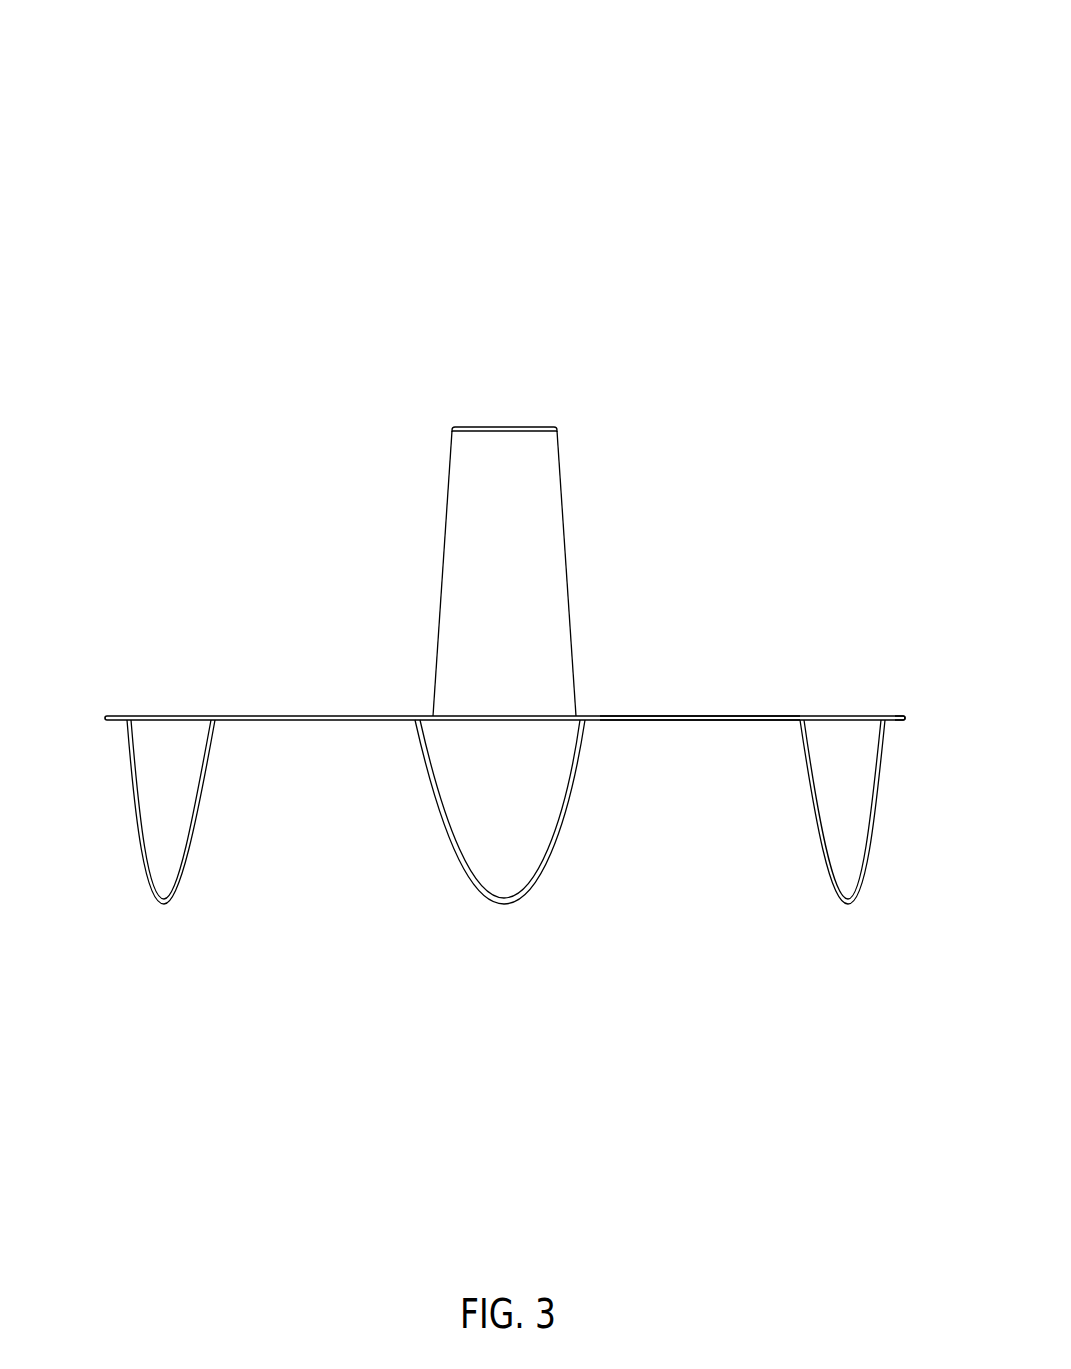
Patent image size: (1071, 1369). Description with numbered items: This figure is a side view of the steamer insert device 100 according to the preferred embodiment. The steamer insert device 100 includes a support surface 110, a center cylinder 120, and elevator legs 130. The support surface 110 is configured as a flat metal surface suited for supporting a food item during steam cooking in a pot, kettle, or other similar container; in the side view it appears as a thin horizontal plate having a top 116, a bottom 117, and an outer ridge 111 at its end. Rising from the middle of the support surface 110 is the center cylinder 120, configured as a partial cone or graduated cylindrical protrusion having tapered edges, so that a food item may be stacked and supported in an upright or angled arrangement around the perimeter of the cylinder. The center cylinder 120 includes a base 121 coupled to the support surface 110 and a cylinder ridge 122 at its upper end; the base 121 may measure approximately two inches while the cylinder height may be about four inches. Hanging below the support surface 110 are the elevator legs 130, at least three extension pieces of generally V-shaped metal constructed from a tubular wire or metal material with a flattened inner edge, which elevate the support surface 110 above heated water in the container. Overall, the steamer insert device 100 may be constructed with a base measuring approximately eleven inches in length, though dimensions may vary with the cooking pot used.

The steamer insert device 100 is at (118, 126).
The support surface 110 is at (218, 698).
The outer ridge 111 is at (904, 716).
The top 116 is at (702, 716).
The bottom 117 is at (684, 722).
The center cylinder 120 is at (415, 525).
The base 121 is at (562, 467).
The cylinder ridge 122 is at (558, 428).
The elevator legs 130 is at (164, 904).